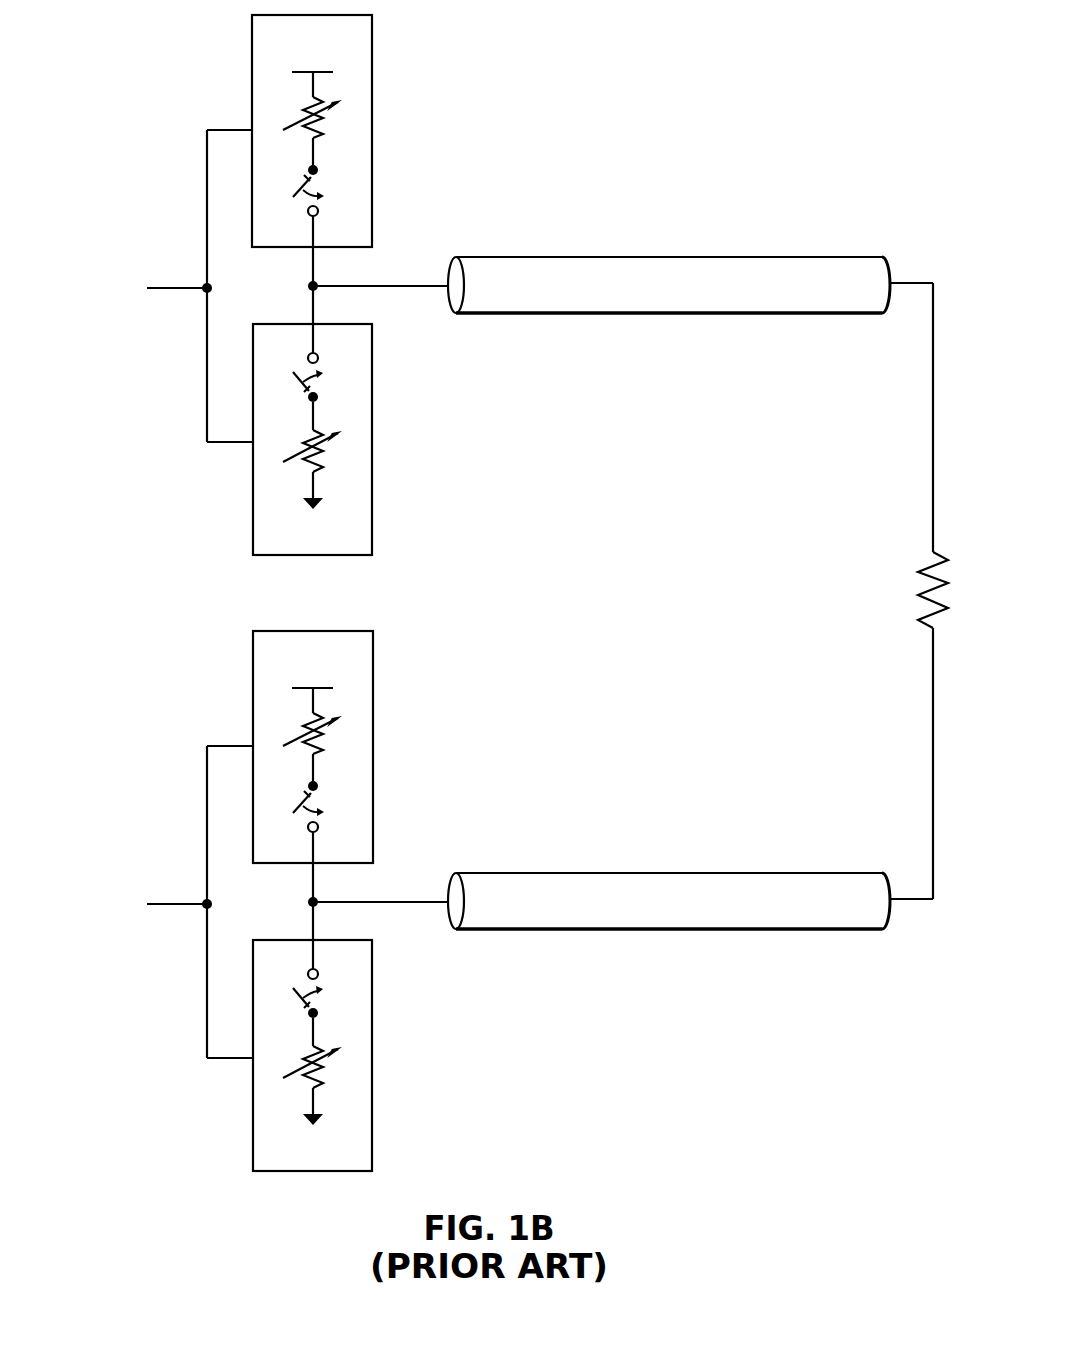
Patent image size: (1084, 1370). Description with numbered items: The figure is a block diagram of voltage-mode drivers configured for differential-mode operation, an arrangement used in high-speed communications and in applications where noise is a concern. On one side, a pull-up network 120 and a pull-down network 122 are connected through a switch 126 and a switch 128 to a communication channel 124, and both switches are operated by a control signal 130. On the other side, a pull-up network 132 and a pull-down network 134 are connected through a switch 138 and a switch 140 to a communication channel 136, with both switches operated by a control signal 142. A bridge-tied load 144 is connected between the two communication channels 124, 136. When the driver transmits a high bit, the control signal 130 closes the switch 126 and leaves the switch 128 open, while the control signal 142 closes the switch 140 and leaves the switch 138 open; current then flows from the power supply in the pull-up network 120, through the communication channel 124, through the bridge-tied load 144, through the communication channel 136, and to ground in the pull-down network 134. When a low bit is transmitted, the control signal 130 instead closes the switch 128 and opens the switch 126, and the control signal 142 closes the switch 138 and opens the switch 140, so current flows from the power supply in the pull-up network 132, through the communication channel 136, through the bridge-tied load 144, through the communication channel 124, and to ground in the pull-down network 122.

The pull-up network 120 is at (312, 150).
The pull-down network 122 is at (312, 418).
The communication channel 124 is at (623, 285).
The switch 126 is at (337, 199).
The switch 128 is at (328, 395).
The control signal 130 is at (148, 286).
The pull-up network 132 is at (313, 766).
The pull-down network 134 is at (312, 1034).
The communication channel 136 is at (623, 901).
The switch 138 is at (340, 815).
The switch 140 is at (330, 1011).
The control signal 142 is at (148, 902).
The bridge-tied load 144 is at (915, 590).